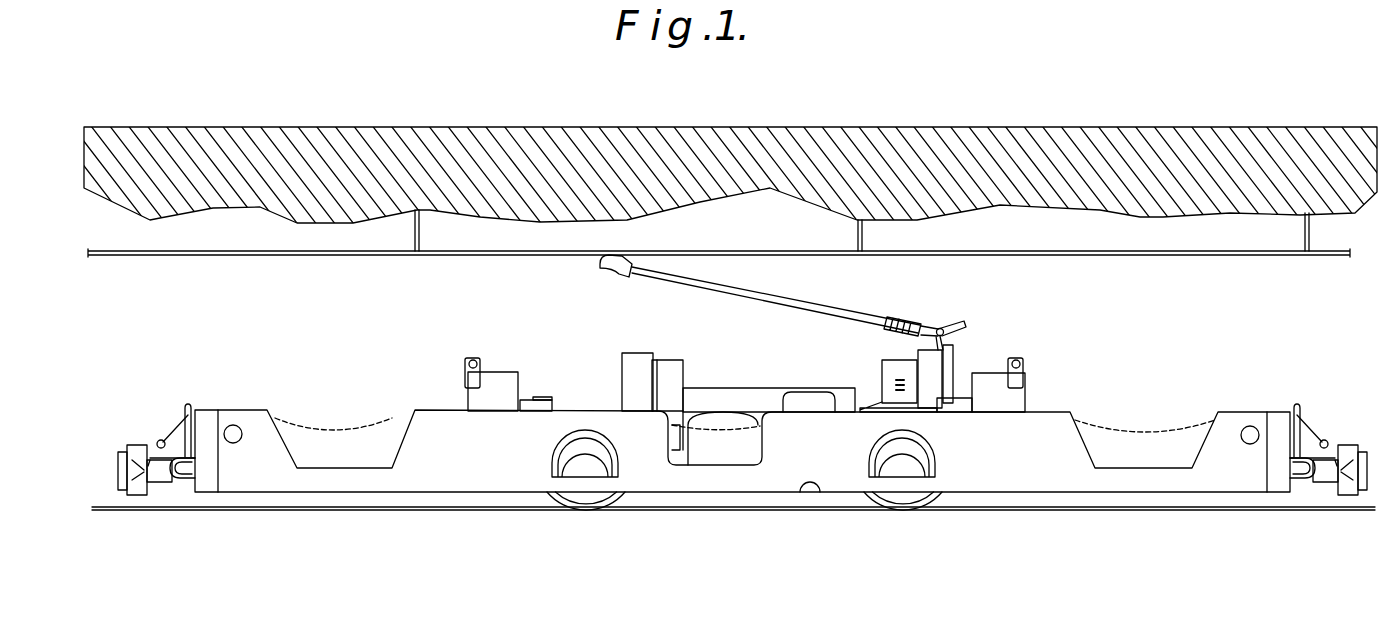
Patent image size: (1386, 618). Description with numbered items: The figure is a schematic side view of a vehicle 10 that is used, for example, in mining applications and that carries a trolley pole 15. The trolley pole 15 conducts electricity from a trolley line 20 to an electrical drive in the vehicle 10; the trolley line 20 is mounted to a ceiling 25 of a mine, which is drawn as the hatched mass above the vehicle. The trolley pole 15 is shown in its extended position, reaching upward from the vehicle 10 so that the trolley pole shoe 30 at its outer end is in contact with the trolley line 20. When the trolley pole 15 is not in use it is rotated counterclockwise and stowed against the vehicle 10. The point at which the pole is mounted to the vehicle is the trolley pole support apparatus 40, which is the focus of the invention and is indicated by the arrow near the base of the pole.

The vehicle 10 is at (1025, 453).
The trolley pole 15 is at (807, 305).
The trolley line 20 is at (370, 254).
The ceiling 25 is at (1138, 217).
The trolley pole shoe 30 is at (618, 267).
The trolley pole support apparatus 40 is at (950, 320).